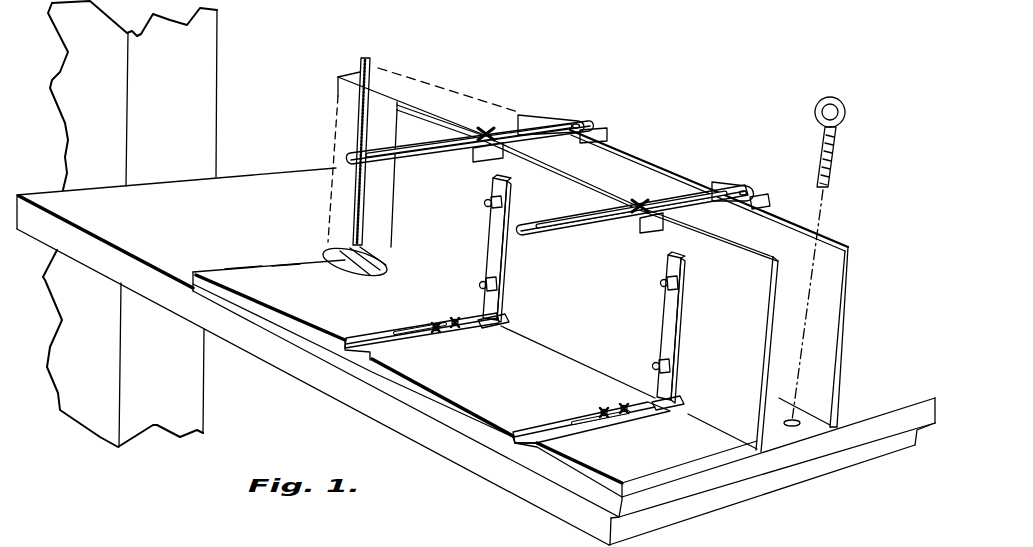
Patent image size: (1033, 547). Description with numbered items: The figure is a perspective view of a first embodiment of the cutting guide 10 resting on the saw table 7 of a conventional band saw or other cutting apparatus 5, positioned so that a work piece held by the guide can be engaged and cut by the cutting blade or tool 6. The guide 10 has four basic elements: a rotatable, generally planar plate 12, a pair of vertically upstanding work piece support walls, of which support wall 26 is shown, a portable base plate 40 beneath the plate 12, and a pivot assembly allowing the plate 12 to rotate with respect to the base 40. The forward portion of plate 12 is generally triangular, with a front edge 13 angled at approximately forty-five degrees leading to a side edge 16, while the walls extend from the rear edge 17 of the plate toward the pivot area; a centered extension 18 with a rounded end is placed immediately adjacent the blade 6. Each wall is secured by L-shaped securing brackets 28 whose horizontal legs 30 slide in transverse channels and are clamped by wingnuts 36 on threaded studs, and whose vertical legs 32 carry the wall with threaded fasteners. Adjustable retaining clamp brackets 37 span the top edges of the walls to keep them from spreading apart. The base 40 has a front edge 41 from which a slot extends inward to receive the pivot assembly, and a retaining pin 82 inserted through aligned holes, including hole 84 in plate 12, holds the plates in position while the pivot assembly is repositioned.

The cutting apparatus 5 is at (159, 224).
The cutting blade 6 is at (371, 127).
The platform 7 is at (164, 223).
The cutting guide 10 is at (553, 257).
The rotatable plate 12 is at (623, 462).
The front edge 13 is at (281, 310).
The side edge 16 is at (564, 395).
The rear edge 17 is at (740, 455).
The extension 18 is at (341, 267).
The support wall 26 is at (637, 247).
The L-shaped securing bracket 28 is at (581, 311).
The horizontally-extending leg 30 is at (493, 328).
The vertically-extending leg 32 is at (489, 230).
The wingnut 36 is at (436, 325).
The retaining clamp bracket 37 is at (558, 174).
The base plate 40 is at (243, 243).
The front edge 41 is at (289, 236).
The retaining pin 82 is at (835, 150).
The hole 84 is at (797, 425).